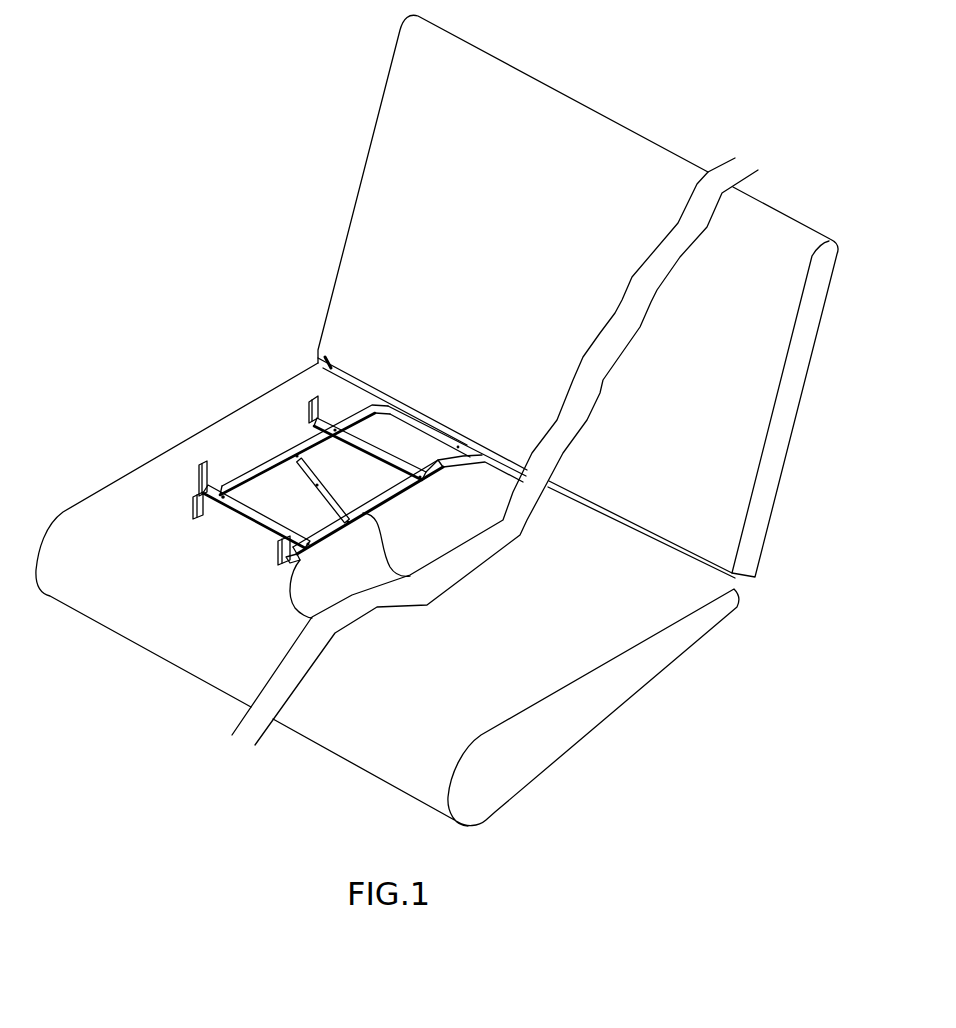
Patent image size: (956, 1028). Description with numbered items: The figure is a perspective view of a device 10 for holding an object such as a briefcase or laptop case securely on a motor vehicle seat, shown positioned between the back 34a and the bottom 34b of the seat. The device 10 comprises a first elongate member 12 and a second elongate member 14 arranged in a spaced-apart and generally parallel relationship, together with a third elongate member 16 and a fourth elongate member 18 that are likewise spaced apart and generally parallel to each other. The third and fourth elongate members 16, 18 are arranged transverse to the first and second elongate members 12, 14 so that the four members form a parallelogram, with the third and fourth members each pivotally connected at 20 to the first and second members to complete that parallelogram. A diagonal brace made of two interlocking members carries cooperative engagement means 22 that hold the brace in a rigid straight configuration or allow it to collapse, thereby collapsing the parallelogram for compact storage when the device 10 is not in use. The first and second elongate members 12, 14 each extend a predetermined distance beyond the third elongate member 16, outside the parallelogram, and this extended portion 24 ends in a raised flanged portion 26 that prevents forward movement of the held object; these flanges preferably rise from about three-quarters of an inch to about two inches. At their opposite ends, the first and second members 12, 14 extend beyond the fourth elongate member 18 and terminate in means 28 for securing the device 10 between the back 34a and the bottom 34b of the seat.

The device 10 is at (458, 342).
The first elongate member 12 is at (262, 473).
The second elongate member 14 is at (363, 513).
The third elongate member 16 is at (230, 510).
The fourth elongate member 18 is at (372, 450).
The pivotal connection 20 is at (227, 492).
The cooperative engagement means 22 is at (347, 497).
The extended portion 24 is at (213, 503).
The raised flanged portion 26 is at (197, 473).
The securing means 28 is at (487, 430).
The back 34a is at (388, 220).
The bottom 34b is at (300, 383).